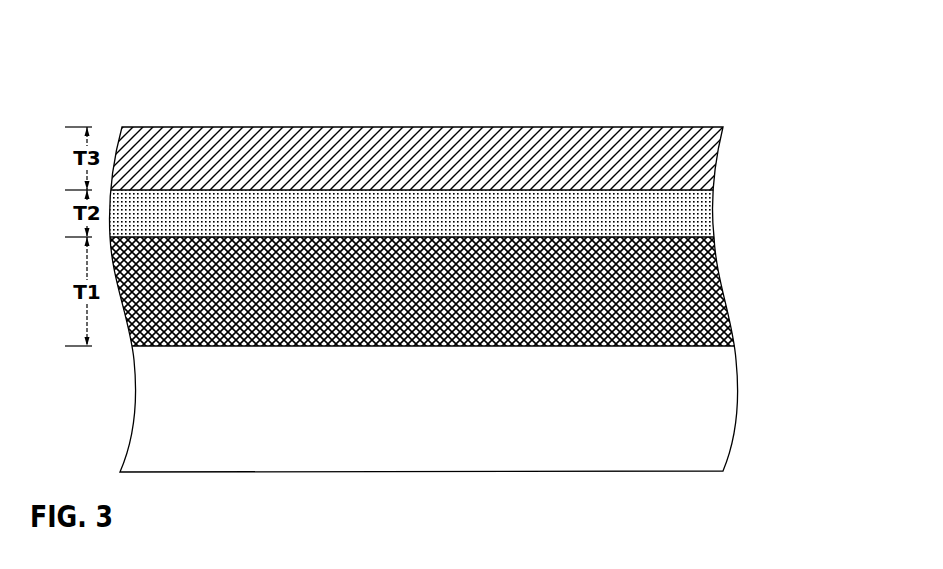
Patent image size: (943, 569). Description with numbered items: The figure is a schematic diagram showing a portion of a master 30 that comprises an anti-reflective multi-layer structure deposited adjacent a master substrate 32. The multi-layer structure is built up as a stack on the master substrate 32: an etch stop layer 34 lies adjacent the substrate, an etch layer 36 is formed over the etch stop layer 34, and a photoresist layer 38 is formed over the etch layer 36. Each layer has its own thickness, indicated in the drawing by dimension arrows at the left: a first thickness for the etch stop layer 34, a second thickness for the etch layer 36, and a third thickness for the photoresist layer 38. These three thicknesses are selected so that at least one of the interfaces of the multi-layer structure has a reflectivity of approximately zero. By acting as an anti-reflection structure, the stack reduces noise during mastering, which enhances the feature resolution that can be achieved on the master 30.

The master 30 is at (152, 81).
The master substrate 32 is at (722, 425).
The etch stop layer 34 is at (708, 330).
The etch layer 36 is at (690, 222).
The photoresist layer 38 is at (660, 140).